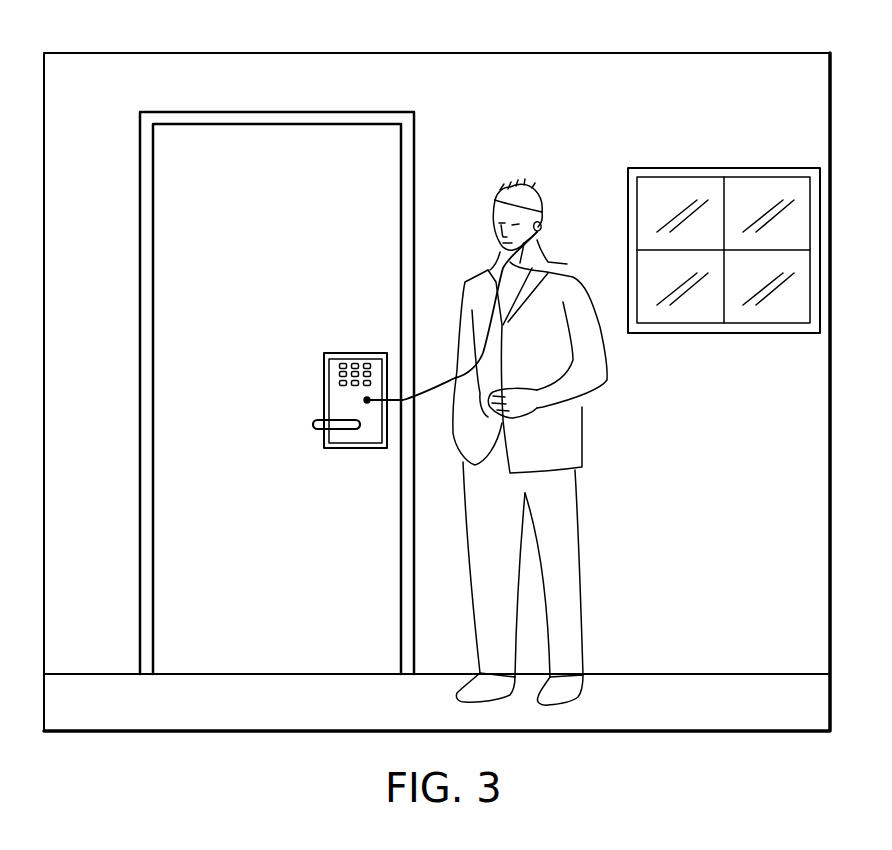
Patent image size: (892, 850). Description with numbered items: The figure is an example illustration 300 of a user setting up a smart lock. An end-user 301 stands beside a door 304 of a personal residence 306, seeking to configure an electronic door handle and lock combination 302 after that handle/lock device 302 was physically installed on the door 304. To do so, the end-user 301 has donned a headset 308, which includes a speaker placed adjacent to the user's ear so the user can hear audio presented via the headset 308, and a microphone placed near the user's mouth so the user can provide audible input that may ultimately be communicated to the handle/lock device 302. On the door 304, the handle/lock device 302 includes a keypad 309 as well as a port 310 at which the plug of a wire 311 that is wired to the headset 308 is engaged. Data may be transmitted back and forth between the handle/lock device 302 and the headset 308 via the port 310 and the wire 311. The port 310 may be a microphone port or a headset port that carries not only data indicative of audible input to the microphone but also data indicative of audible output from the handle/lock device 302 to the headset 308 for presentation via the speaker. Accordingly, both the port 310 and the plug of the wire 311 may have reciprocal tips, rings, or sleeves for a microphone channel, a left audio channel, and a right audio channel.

The example illustration 300 is at (132, 42).
The end-user 301 is at (498, 210).
The electronic door handle and lock combination 302 is at (355, 448).
The door 304 is at (150, 399).
The personal residence 306 is at (763, 700).
The headset 308 is at (541, 228).
The keypad 309 is at (340, 365).
The port 310 is at (367, 400).
The wire 311 is at (455, 378).